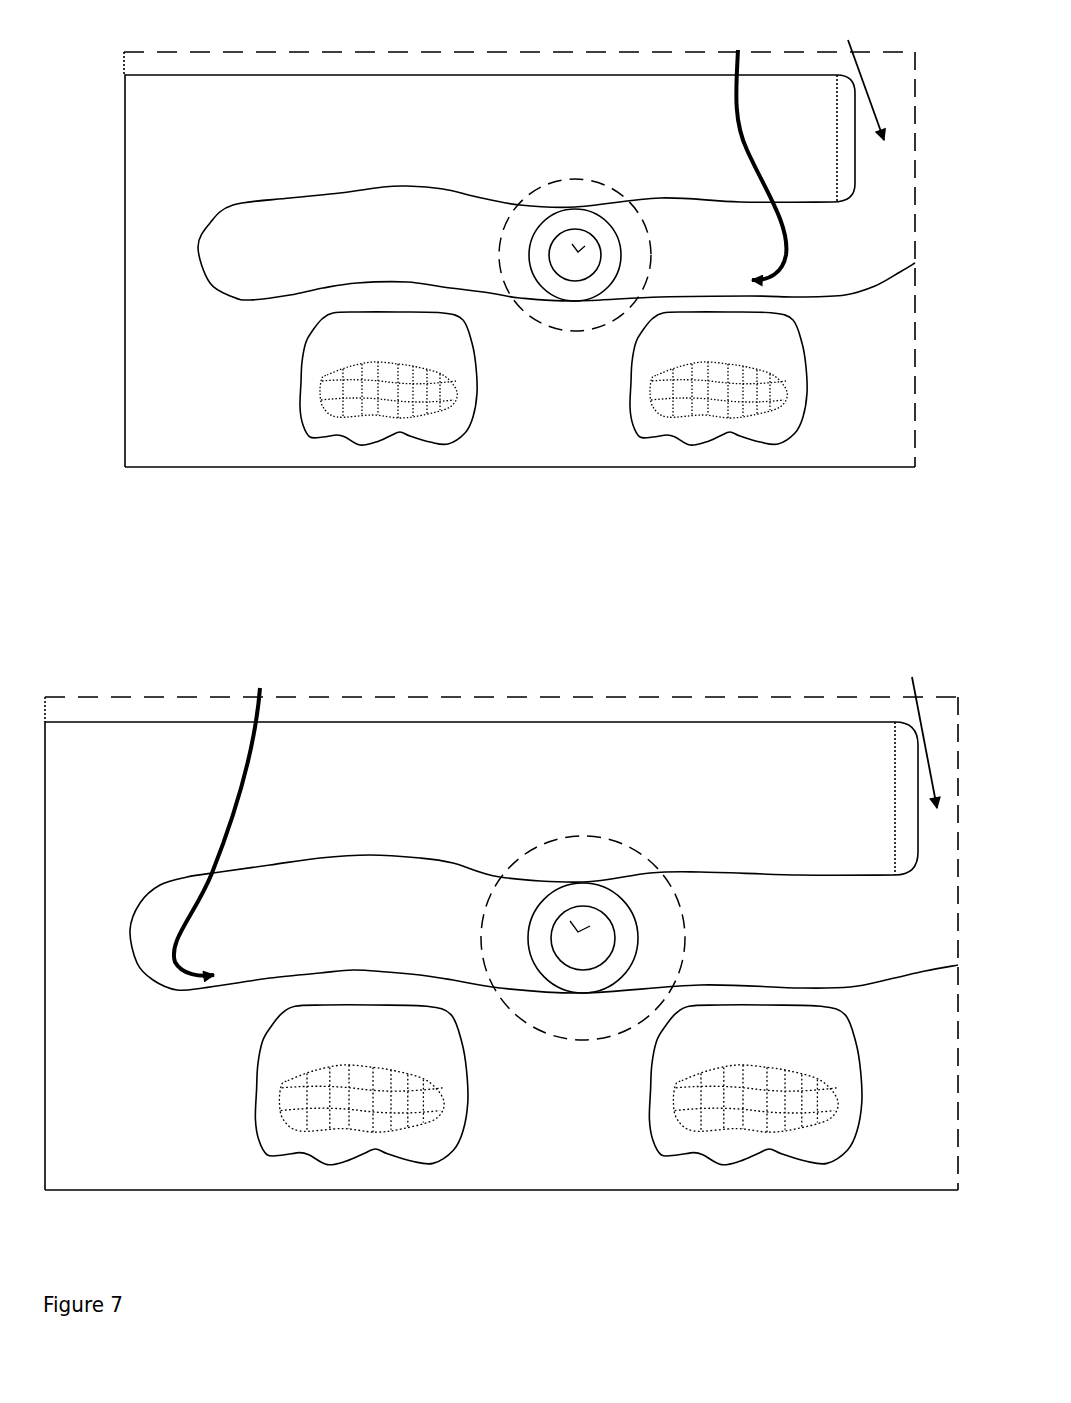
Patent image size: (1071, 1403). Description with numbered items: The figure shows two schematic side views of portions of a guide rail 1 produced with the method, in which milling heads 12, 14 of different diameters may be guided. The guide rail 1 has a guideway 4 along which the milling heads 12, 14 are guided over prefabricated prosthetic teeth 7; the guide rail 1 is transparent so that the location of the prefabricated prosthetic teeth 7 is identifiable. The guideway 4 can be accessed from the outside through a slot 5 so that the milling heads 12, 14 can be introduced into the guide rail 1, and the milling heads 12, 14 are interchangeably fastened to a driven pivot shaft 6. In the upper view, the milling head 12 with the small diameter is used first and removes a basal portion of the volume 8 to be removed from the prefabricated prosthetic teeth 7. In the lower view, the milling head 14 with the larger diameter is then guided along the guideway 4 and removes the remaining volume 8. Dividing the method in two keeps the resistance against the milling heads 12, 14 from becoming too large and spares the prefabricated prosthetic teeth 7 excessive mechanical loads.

The guide rail 1 is at (662, 193).
The guideway 4 is at (480, 497).
The slot 5 is at (888, 410).
The driven pivot shaft 6 is at (578, 277).
The prefabricated prosthetic teeth 7 is at (415, 435).
The volume to be removed 8 is at (440, 357).
The milling head 12 is at (637, 290).
The milling head 14 is at (655, 957).